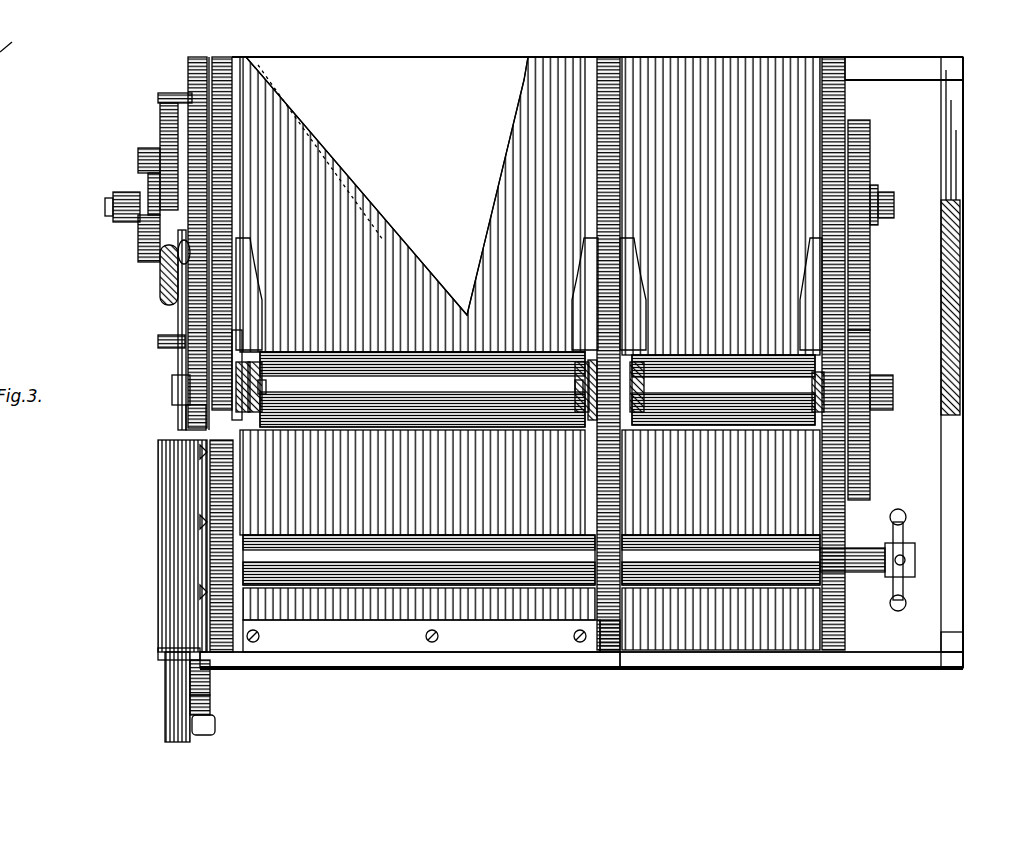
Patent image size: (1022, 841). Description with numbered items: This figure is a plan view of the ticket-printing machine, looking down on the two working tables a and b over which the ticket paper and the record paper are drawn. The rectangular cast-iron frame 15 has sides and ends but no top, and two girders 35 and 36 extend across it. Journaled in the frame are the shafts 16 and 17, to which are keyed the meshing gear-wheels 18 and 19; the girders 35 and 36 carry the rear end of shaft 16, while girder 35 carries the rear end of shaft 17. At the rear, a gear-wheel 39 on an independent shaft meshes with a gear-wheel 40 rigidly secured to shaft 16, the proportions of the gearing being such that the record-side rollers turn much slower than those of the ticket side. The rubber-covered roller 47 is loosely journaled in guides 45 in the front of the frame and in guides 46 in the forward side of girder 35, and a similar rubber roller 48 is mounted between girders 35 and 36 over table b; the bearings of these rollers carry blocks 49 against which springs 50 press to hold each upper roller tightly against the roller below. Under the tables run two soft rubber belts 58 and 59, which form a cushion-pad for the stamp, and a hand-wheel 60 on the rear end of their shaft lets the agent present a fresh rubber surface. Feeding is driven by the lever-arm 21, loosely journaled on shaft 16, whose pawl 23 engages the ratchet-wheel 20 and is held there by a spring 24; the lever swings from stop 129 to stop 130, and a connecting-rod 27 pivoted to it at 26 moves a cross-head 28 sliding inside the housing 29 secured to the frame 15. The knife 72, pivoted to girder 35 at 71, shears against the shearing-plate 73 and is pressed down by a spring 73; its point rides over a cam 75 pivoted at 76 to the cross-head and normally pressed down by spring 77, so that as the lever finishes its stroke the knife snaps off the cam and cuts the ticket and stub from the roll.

The table a is at (417, 338).
The table b is at (721, 353).
The rectangular frame 15 is at (224, 70).
The shaft 16 is at (830, 202).
The shaft 17 is at (172, 392).
The gear-wheel 18 is at (196, 70).
The gear-wheel 19 is at (186, 410).
The ratchet-wheel 20 is at (140, 152).
The lever-arm 21 is at (162, 128).
The pawl 23 is at (150, 232).
The spring 24 is at (152, 188).
The pivot 26 is at (178, 258).
The connecting-rod 27 is at (180, 312).
The cross-head 28 is at (166, 700).
The housing 29 is at (160, 526).
The girder 35 is at (620, 160).
The girder 36 is at (826, 165).
The gear-wheel 39 is at (852, 440).
The gear-wheel 40 is at (850, 138).
The guides 45 is at (242, 420).
The guides 46 is at (594, 422).
The rubber-covered roller 47 is at (421, 389).
The rubber roller 48 is at (723, 390).
The blocks 49 is at (258, 375).
The springs 50 is at (258, 318).
The belt 58 is at (419, 560).
The belt 59 is at (721, 560).
The hand-wheel 60 is at (905, 525).
The pivot 71 is at (608, 656).
The knife 72 is at (432, 658).
The shearing-plate 73 is at (348, 684).
The cam 75 is at (210, 706).
The pivot 76 is at (215, 728).
The spring 77 is at (210, 683).
The stop 129 is at (172, 98).
The stop 130 is at (160, 342).